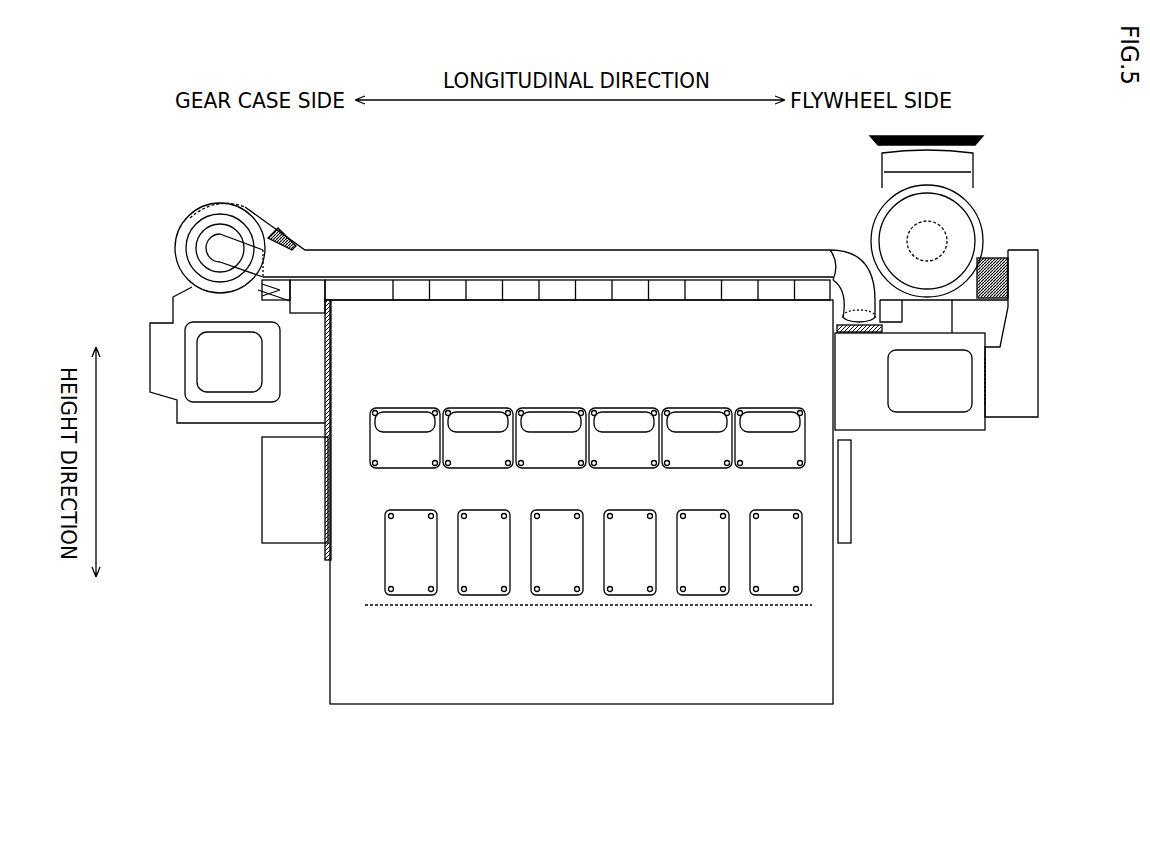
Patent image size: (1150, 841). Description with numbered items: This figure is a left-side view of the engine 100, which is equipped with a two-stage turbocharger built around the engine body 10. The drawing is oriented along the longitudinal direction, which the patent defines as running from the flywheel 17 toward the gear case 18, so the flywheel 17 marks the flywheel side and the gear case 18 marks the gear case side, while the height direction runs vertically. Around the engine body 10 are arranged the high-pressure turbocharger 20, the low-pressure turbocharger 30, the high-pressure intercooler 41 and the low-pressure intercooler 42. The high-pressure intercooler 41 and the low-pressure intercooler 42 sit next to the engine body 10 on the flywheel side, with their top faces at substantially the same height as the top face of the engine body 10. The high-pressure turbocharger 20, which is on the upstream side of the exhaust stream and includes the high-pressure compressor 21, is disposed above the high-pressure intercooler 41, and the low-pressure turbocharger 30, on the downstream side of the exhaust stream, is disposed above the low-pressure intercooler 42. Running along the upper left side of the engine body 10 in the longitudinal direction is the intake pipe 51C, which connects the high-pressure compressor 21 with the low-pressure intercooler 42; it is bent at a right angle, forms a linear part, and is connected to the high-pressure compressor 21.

The engine 100 is at (592, 396).
The engine body 10 is at (849, 590).
The flywheel 17 is at (856, 489).
The gear case 18 is at (262, 528).
The high-pressure turbocharger 20 is at (158, 262).
The high-pressure compressor 21 is at (222, 201).
The low-pressure turbocharger 30 is at (997, 211).
The high-pressure intercooler 41 is at (230, 422).
The low-pressure intercooler 42 is at (906, 424).
The intake pipe 51C is at (484, 249).